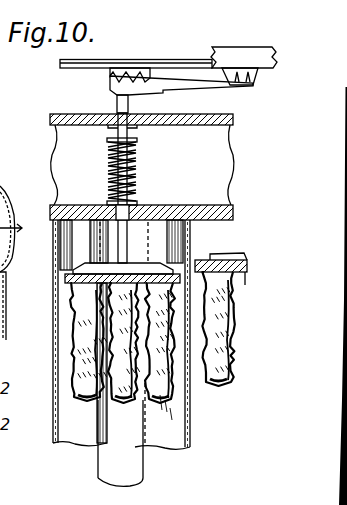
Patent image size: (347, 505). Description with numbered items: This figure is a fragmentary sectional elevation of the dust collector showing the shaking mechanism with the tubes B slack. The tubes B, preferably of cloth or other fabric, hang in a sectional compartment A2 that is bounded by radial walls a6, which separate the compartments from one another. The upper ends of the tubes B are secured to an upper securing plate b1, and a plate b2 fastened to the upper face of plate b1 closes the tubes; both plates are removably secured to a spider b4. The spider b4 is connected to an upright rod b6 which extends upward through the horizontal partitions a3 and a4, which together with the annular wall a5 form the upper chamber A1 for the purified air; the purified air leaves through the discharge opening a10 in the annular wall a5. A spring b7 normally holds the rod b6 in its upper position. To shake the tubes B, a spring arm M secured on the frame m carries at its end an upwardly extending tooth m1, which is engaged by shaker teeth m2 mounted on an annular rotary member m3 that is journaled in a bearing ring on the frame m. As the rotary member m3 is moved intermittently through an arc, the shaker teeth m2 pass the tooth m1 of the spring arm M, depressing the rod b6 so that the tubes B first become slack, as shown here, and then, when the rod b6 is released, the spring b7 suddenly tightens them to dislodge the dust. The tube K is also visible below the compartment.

The frame m is at (238, 55).
The upwardly extending tooth m1 is at (110, 82).
The shaker teeth m2 is at (131, 70).
The annular rotary member m3 is at (180, 62).
The spring arm M is at (188, 88).
The annular wall a5 is at (60, 130).
The upper horizontal partition a3 is at (186, 126).
The upper chamber A1 is at (215, 162).
The discharge opening a10 is at (8, 206).
The spider b4 is at (92, 218).
The upright rod b6 is at (137, 166).
The spring b7 is at (137, 194).
The horizontal partition a4 is at (193, 212).
The sectional compartment A2 is at (205, 238).
The radial wall a6 is at (200, 432).
The closing plate b2 is at (145, 272).
The upper securing plate b1 is at (62, 292).
The tubes B is at (2, 340).
The tube K is at (134, 384).